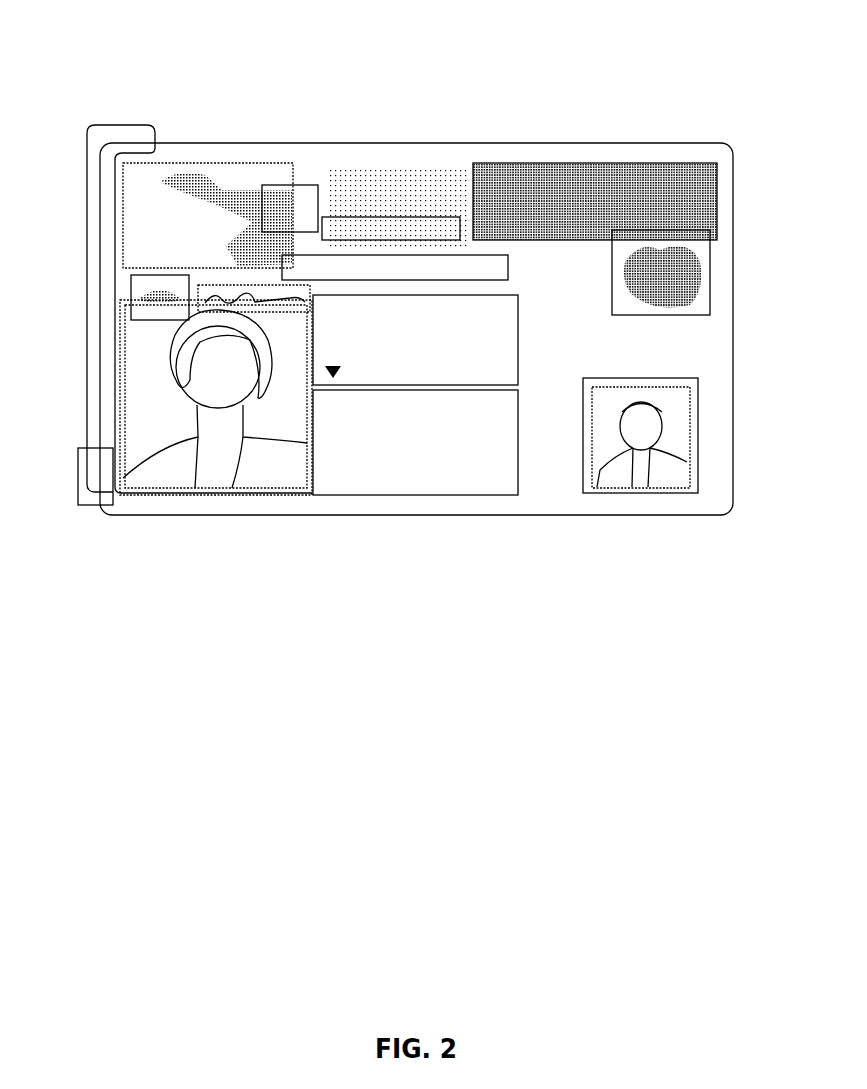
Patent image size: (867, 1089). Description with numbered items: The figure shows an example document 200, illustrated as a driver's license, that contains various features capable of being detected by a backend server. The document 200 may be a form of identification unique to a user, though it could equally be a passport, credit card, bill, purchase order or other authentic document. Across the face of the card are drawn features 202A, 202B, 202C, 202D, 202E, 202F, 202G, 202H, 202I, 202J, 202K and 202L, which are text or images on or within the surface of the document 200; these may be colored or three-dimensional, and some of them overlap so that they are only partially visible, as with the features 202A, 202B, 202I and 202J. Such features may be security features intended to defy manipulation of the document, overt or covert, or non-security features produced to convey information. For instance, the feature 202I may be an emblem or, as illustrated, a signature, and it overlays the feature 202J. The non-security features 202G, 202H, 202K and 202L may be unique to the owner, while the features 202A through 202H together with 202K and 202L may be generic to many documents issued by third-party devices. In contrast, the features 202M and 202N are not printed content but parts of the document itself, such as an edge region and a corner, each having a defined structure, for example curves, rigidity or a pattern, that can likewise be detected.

The document 200 is at (77, 70).
The feature 202A is at (193, 163).
The feature 202B is at (293, 185).
The feature 202C is at (383, 216).
The feature 202D is at (470, 254).
The feature 202E is at (607, 163).
The feature 202F is at (710, 266).
The feature 202G is at (518, 345).
The feature 202H is at (698, 436).
The feature 202I is at (131, 277).
The feature 202J is at (200, 297).
The feature 202K is at (241, 496).
The feature 202L is at (380, 495).
The feature 202M is at (86, 255).
The feature 202N is at (78, 472).